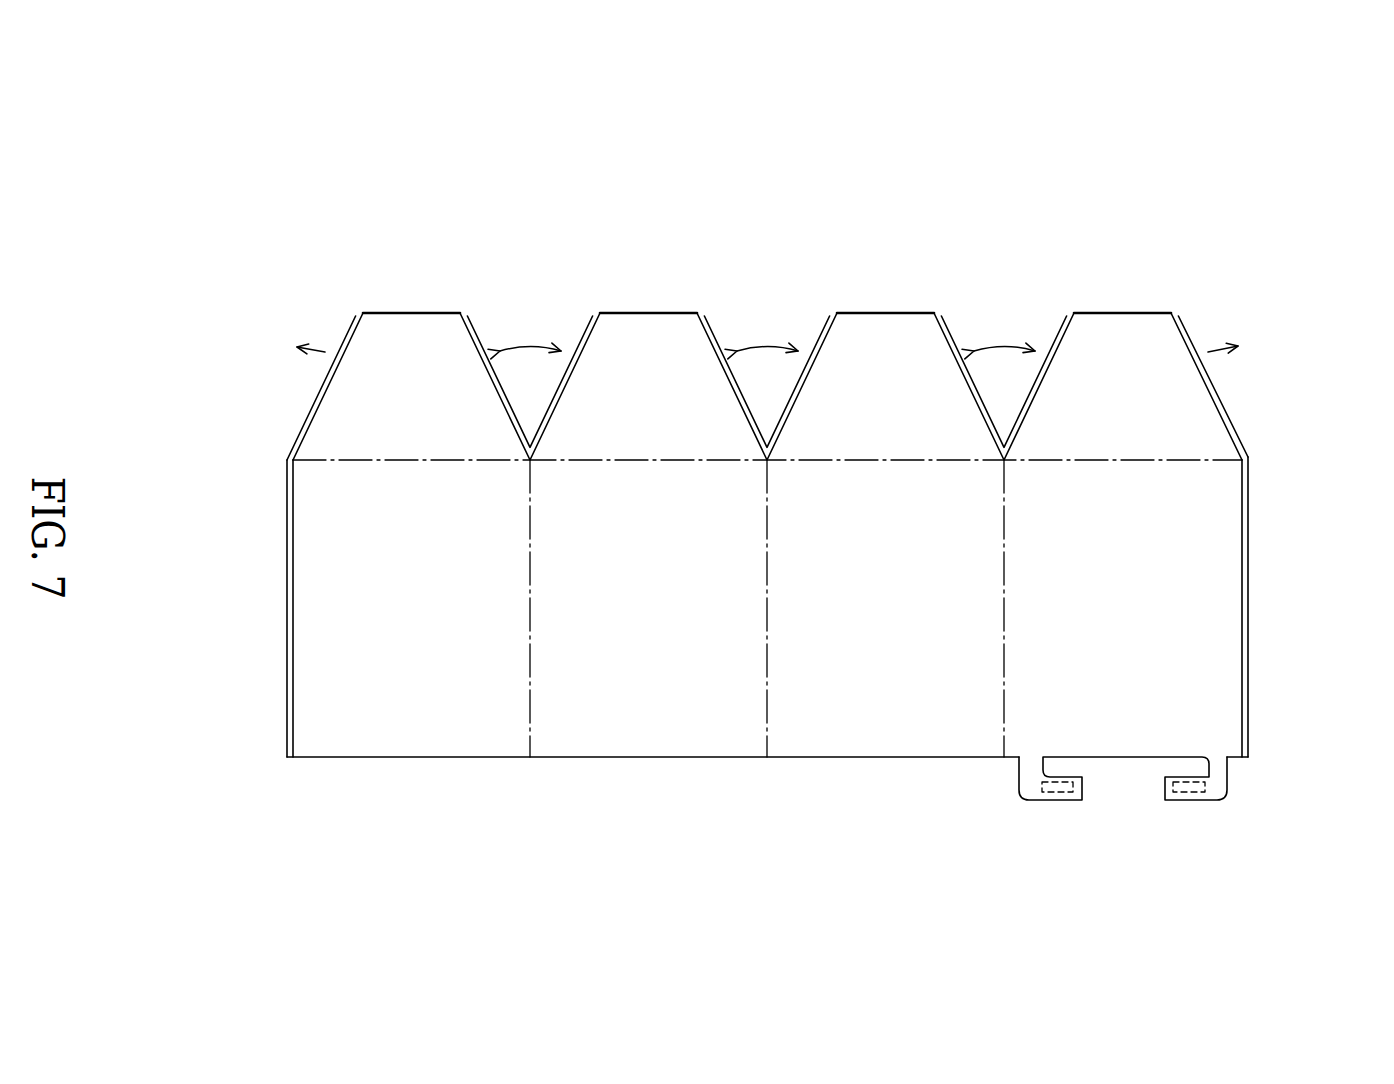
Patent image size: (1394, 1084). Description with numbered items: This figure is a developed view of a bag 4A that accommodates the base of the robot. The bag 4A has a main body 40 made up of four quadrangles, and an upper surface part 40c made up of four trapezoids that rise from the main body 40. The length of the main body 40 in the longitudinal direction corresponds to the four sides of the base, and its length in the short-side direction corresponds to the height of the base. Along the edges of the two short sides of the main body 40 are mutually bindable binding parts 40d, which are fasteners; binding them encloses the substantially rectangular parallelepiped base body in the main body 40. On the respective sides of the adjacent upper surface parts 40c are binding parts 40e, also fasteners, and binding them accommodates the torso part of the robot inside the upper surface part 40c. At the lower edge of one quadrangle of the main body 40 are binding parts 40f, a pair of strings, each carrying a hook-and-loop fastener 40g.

The bag 4A is at (1214, 198).
The main body 40 is at (1249, 500).
The upper surface part 40c is at (413, 312).
The binding part 40d is at (288, 572).
The binding part 40e is at (337, 345).
The binding part 40f is at (1065, 803).
The hook-and-loop fastener 40g is at (1048, 805).